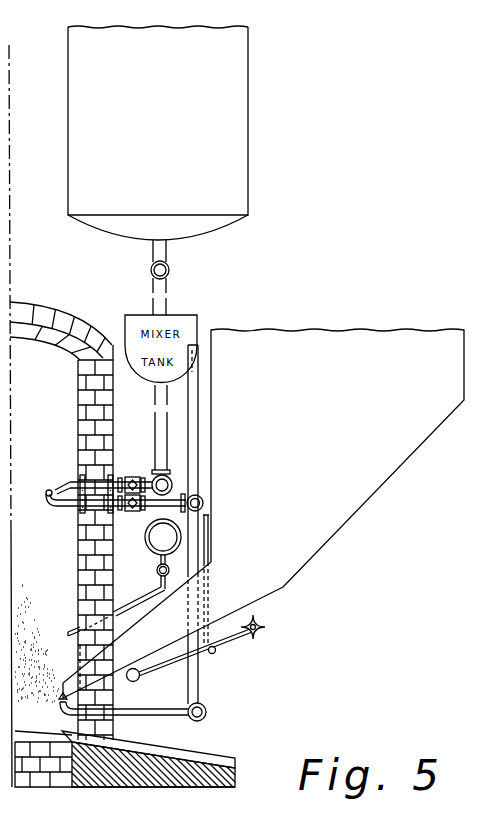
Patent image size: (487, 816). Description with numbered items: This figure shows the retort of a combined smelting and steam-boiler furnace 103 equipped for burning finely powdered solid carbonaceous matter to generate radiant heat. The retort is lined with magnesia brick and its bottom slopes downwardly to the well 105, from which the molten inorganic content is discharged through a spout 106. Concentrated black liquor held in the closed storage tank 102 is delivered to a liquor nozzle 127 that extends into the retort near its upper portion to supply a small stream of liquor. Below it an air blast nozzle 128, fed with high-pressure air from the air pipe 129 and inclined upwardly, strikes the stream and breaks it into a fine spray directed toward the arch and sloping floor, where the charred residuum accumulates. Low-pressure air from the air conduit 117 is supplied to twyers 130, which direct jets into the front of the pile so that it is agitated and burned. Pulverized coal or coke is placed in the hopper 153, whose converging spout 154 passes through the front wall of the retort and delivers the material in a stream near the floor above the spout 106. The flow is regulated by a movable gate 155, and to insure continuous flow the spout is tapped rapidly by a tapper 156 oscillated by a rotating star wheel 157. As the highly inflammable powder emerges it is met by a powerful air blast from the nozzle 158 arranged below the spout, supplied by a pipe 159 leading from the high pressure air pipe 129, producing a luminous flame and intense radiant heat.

The closed storage tank 102 is at (158, 133).
The combined smelting and steam-boiler furnace 103 is at (33, 312).
The air conduit 117 is at (163, 547).
The liquor nozzle 127 is at (70, 482).
The air blast nozzle 128 is at (50, 508).
The high pressure air pipe 129 is at (203, 501).
The twyer 130 is at (131, 600).
The hopper 153 is at (362, 501).
The converging spout 154 is at (173, 630).
The movable gate 155 is at (210, 537).
The tapper 156 is at (158, 670).
The rotating star wheel 157 is at (266, 628).
The air nozzle 158 is at (59, 708).
The air pipe 159 is at (200, 688).
The well 105 is at (120, 735).
The spout 106 is at (214, 762).